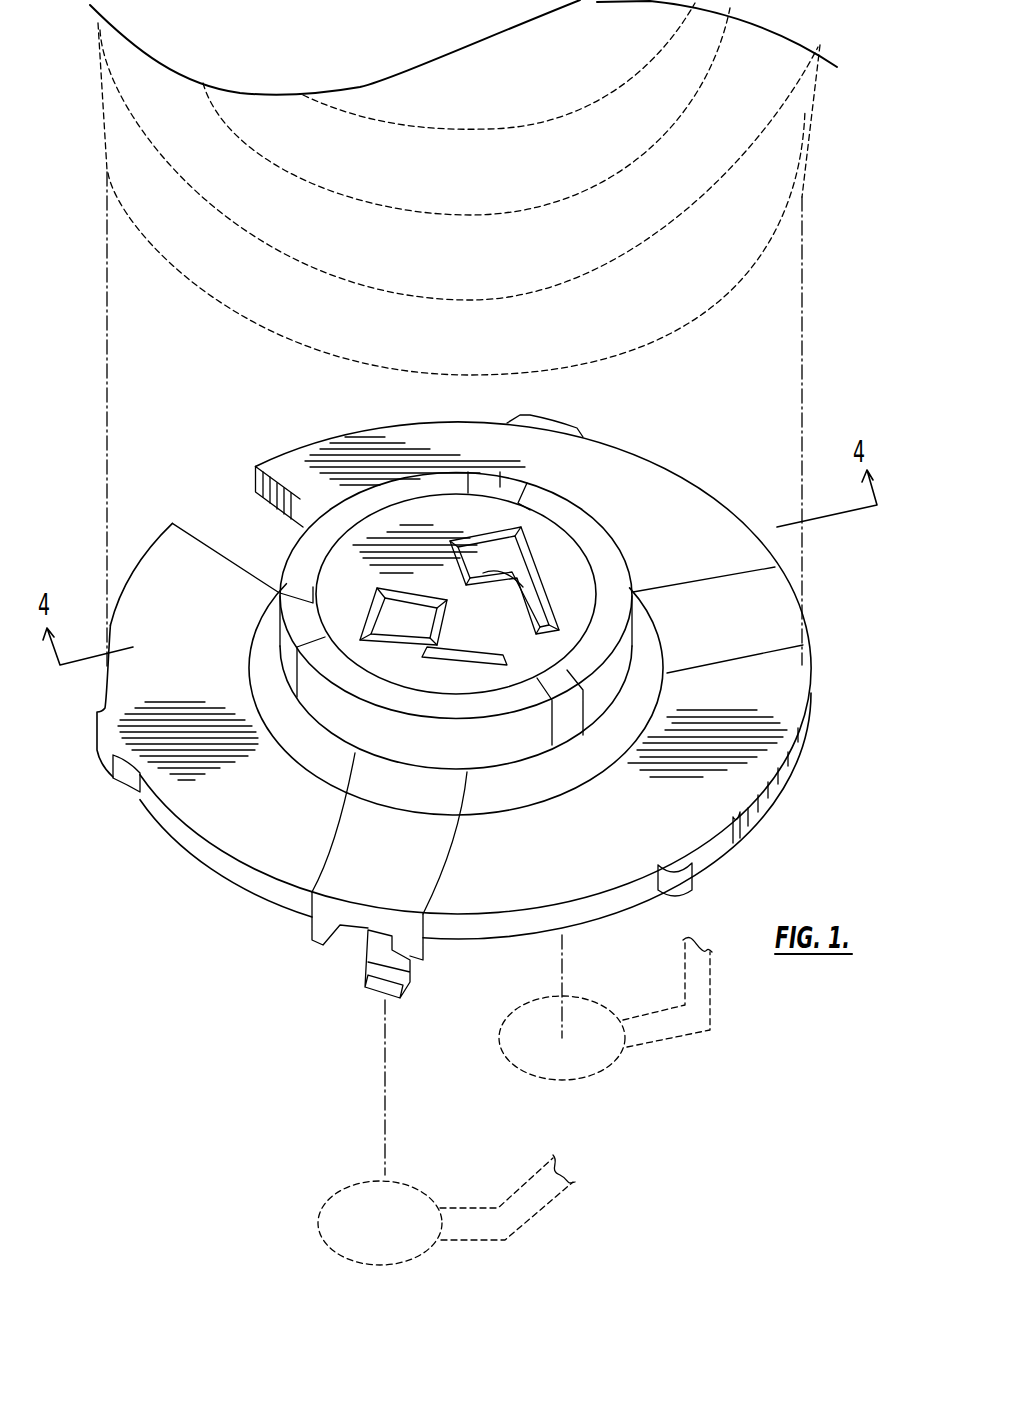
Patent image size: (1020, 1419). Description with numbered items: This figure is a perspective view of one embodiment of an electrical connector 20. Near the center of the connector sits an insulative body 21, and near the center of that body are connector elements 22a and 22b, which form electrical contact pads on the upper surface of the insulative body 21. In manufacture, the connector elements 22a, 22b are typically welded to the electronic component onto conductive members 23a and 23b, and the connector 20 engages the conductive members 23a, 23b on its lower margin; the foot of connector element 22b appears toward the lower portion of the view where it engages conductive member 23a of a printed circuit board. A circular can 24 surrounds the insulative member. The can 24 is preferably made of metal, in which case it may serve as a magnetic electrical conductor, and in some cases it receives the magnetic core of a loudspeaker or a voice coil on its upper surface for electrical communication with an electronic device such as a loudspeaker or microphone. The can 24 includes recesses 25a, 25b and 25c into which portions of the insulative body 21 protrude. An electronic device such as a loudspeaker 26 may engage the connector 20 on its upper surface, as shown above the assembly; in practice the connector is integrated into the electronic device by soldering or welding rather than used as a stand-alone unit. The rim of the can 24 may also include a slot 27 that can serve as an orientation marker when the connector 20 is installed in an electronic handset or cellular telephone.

The connector 20 is at (182, 1061).
The insulative body 21 is at (563, 563).
The connector element 22a is at (487, 560).
The connector element 22b is at (403, 623).
The conductive member 23a is at (385, 1225).
The conductive member 23b is at (578, 1057).
The circular can 24 is at (233, 810).
The recess 25a is at (310, 620).
The recess 25b is at (576, 700).
The recess 25c is at (500, 487).
The loudspeaker 26 is at (777, 133).
The slot 27 is at (245, 532).